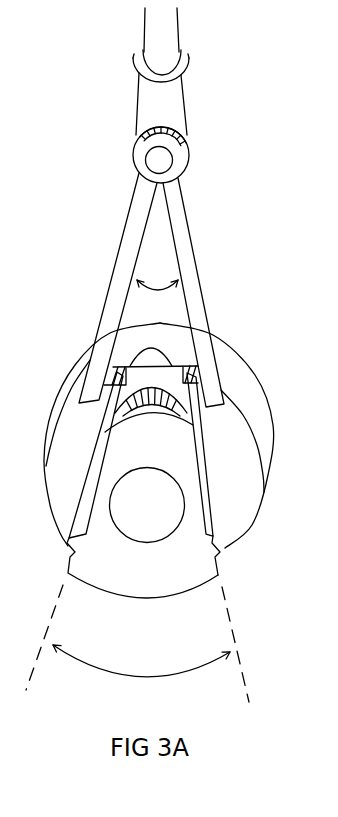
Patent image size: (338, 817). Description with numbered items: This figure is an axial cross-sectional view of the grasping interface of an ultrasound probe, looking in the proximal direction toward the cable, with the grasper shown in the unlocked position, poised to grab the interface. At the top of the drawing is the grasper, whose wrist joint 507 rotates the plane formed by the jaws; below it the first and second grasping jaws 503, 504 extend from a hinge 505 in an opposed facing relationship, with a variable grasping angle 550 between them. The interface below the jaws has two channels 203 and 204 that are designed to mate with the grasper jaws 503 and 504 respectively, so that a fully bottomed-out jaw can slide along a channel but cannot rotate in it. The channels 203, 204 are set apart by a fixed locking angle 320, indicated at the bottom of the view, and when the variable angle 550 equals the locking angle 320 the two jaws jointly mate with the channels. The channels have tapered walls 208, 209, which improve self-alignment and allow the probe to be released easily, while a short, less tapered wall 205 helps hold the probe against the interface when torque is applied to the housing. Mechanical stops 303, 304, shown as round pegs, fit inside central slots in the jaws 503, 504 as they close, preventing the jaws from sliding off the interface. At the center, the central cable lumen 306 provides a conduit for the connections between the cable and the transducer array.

The wrist joint 507 is at (185, 68).
The hinge 505 is at (165, 160).
The second grasping jaw 504 is at (112, 262).
The first grasping jaw 503 is at (200, 266).
The variable grasping angle 550 is at (157, 293).
The short less tapered wall 205 is at (151, 358).
The channel 204 is at (103, 452).
The channel 203 is at (186, 488).
The tapered wall 209 is at (102, 434).
The tapered wall 208 is at (217, 435).
The central cable lumen 306 is at (167, 542).
The mechanical stop 304 is at (78, 542).
The mechanical stop 303 is at (212, 547).
The locking angle 320 is at (137, 643).